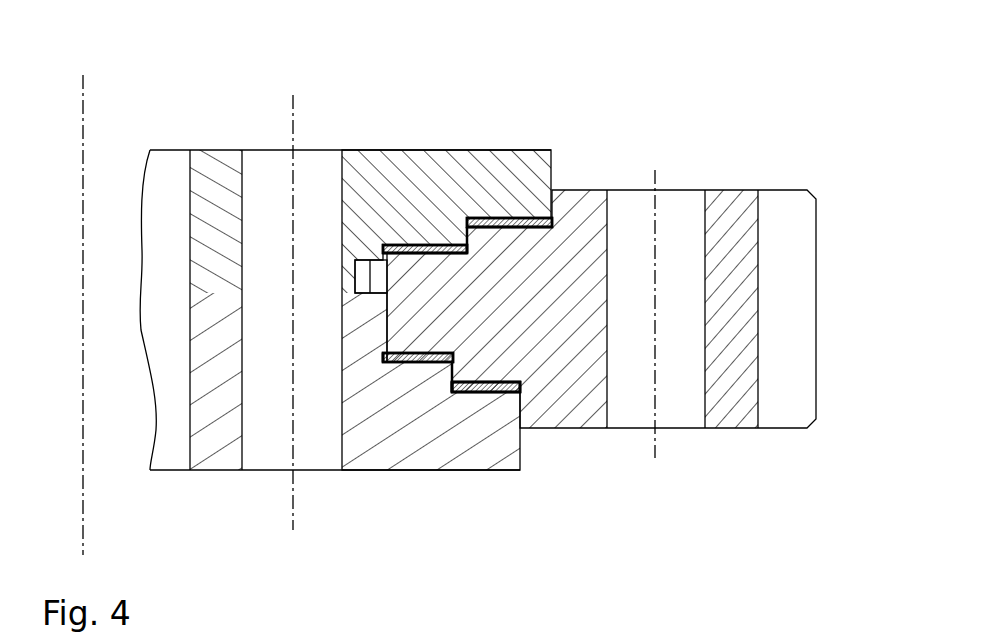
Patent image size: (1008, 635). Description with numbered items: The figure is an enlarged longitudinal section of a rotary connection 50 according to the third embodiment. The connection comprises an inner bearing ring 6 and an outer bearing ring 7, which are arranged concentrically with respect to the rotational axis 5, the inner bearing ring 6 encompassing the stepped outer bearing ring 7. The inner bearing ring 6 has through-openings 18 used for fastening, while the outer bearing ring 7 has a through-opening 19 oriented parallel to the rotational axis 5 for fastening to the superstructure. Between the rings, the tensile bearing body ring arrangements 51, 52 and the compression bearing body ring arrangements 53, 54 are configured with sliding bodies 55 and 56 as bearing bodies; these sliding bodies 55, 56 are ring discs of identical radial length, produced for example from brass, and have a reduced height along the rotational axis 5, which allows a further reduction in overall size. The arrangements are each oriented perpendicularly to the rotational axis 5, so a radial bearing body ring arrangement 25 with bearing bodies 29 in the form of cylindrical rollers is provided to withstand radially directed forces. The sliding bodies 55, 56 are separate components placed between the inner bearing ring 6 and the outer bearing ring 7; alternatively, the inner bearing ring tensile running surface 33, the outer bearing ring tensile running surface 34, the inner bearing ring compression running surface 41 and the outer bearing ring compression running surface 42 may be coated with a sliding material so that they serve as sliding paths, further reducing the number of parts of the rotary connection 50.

The rotational axis 5 is at (85, 165).
The inner bearing ring 6 is at (329, 139).
The outer bearing ring 7 is at (594, 442).
The through-openings 18 is at (317, 160).
The through-opening 19 is at (673, 407).
The radial bearing body ring arrangement 25 is at (342, 272).
The bearing bodies 29 is at (366, 283).
The inner bearing ring tensile running surface 33 is at (463, 252).
The outer bearing ring tensile running surface 34 is at (396, 256).
The inner bearing ring compression running surface 41 is at (415, 352).
The outer bearing ring compression running surface 42 is at (396, 364).
The rotary connection 50 is at (553, 120).
The tensile bearing body ring arrangement 51 is at (500, 208).
The tensile bearing body ring arrangement 52 is at (425, 235).
The compression bearing body ring arrangement 53 is at (453, 362).
The compression bearing body ring arrangement 54 is at (489, 397).
The sliding bodies 55 is at (461, 248).
The sliding bodies 56 is at (421, 372).